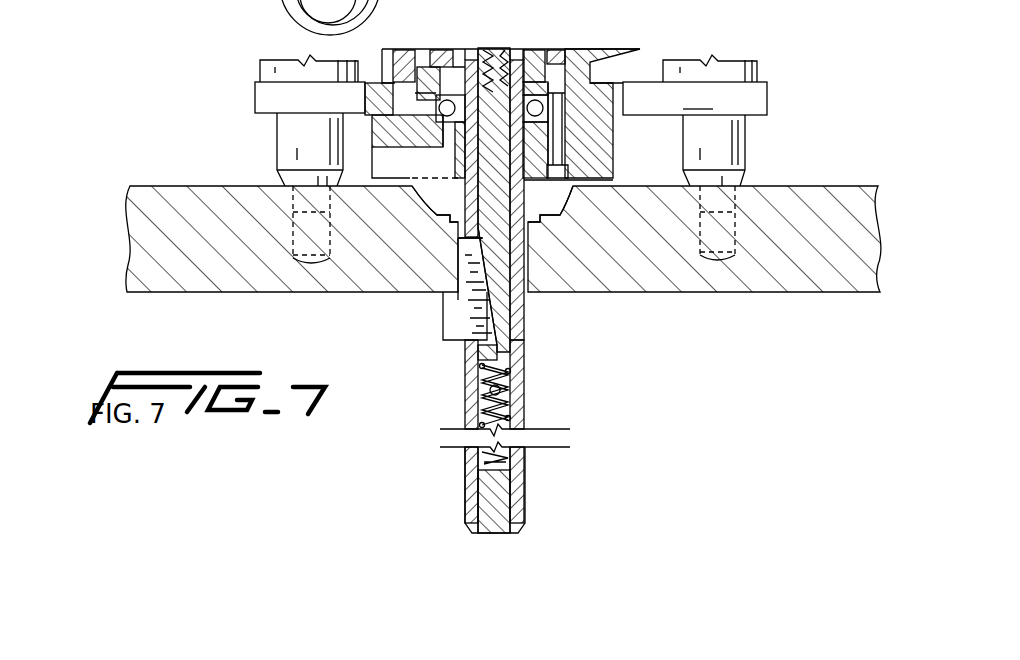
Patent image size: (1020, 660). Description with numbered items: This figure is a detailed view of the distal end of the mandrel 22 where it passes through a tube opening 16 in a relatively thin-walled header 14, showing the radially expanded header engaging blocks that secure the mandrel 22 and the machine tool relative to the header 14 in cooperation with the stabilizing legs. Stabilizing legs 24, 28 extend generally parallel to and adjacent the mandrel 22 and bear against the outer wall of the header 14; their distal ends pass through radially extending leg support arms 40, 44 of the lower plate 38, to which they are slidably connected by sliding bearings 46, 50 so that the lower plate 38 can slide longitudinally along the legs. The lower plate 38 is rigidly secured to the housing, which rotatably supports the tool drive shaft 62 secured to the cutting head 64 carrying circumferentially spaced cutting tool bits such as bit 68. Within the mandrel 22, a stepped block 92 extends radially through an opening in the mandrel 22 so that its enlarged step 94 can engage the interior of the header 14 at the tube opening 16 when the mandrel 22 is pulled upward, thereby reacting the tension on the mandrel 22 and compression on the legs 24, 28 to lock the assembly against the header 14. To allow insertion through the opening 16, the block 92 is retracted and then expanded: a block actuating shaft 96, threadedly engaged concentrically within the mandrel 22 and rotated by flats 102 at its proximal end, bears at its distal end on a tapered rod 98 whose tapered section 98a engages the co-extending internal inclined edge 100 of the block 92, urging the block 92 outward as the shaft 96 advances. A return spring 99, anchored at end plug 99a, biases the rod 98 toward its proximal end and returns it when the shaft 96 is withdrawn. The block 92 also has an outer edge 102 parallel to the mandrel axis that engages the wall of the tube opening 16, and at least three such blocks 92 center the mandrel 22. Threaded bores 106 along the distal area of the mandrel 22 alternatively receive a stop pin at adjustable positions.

The header 14 is at (842, 186).
The opening 16 is at (524, 260).
The mandrel 22 is at (525, 378).
The stabilizing leg 24 is at (277, 148).
The stabilizing leg 28 is at (745, 145).
The lower plate 38 is at (782, 104).
The leg support arm 40 is at (255, 98).
The leg support arm 44 is at (699, 95).
The sliding bearing 46 is at (258, 63).
The sliding bearing 50 is at (768, 72).
The tool drive shaft 62 is at (523, 50).
The cutting head 64 is at (613, 148).
The cutting tool bit 68 is at (435, 198).
The stepped block 92 is at (467, 293).
The enlarged step 94 is at (443, 330).
The block actuating shaft 96 is at (494, 62).
The tapered rod 98 is at (497, 172).
The tapered section 98a is at (497, 313).
The return spring 99 is at (515, 420).
The end plug 99a is at (505, 492).
The internal inclined edge 100 is at (495, 262).
The flats 102 is at (462, 277).
The threaded bore 106 is at (477, 404).